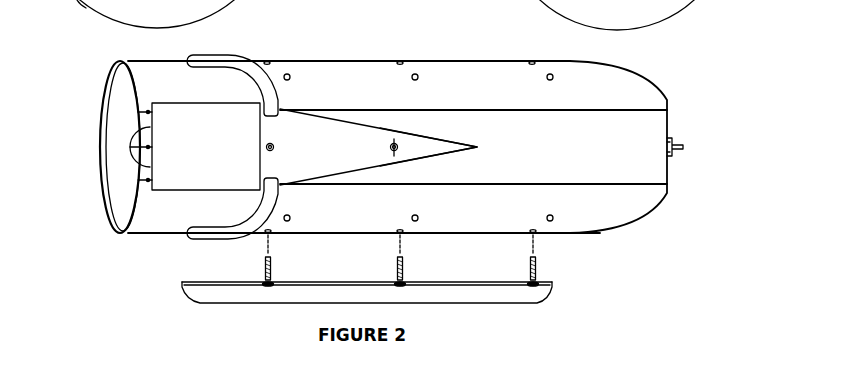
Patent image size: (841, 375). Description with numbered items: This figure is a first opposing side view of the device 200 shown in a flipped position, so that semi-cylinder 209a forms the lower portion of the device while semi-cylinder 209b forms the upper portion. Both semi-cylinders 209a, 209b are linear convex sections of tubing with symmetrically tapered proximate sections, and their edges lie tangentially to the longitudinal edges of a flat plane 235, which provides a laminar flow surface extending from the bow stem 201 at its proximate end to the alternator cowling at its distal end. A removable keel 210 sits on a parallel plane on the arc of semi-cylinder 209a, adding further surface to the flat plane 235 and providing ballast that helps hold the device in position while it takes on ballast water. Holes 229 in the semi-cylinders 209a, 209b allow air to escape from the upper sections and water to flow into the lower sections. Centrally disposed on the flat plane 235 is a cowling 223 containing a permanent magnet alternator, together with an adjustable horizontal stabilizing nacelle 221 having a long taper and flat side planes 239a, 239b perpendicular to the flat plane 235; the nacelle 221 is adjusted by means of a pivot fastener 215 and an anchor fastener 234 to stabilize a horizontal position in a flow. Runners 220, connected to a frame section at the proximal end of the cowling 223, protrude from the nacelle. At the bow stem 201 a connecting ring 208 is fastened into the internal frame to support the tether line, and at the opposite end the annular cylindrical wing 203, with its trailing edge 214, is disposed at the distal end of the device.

The device 200 is at (422, 0).
The bow stem 201 is at (667, 170).
The annular cylindrical wing 203 is at (110, 167).
The connecting ring 208 is at (684, 147).
The semi-cylinder 209a is at (165, 218).
The semi-cylinder 209b is at (317, 72).
The removable keel 210 is at (535, 298).
The trailing edge 214 is at (100, 112).
The pivot fastener 215 is at (274, 148).
The runners 220 is at (220, 236).
The adjustable horizontal stabilizing nacelle 221 is at (333, 158).
The cowling 223 is at (230, 163).
The holes 229 is at (550, 73).
The anchor fastener 234 is at (389, 149).
The flat plane 235 is at (610, 170).
The flat side plane 239a is at (437, 157).
The flat side plane 239b is at (437, 137).